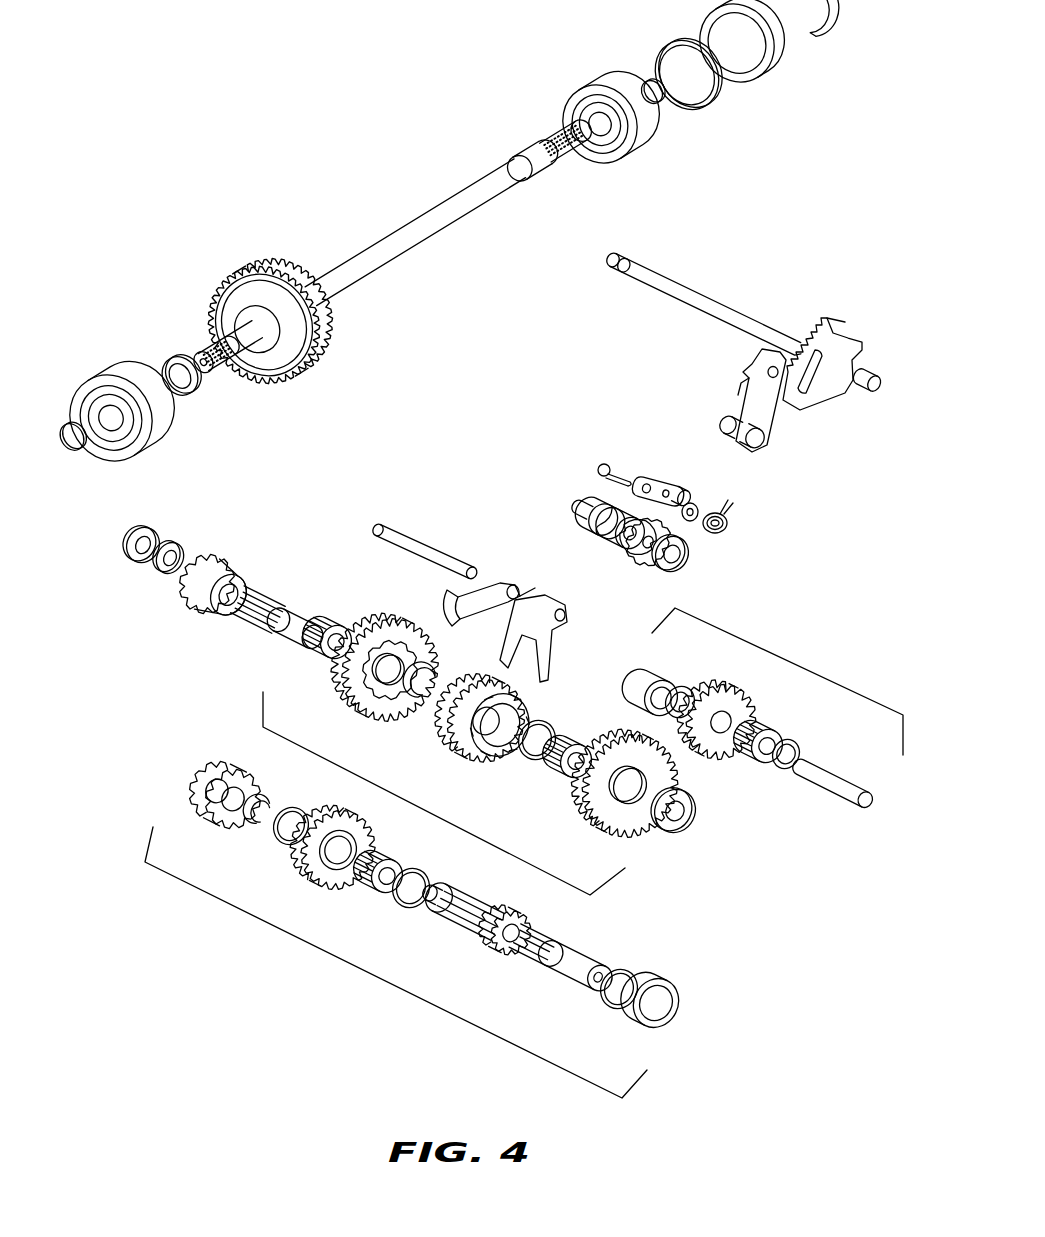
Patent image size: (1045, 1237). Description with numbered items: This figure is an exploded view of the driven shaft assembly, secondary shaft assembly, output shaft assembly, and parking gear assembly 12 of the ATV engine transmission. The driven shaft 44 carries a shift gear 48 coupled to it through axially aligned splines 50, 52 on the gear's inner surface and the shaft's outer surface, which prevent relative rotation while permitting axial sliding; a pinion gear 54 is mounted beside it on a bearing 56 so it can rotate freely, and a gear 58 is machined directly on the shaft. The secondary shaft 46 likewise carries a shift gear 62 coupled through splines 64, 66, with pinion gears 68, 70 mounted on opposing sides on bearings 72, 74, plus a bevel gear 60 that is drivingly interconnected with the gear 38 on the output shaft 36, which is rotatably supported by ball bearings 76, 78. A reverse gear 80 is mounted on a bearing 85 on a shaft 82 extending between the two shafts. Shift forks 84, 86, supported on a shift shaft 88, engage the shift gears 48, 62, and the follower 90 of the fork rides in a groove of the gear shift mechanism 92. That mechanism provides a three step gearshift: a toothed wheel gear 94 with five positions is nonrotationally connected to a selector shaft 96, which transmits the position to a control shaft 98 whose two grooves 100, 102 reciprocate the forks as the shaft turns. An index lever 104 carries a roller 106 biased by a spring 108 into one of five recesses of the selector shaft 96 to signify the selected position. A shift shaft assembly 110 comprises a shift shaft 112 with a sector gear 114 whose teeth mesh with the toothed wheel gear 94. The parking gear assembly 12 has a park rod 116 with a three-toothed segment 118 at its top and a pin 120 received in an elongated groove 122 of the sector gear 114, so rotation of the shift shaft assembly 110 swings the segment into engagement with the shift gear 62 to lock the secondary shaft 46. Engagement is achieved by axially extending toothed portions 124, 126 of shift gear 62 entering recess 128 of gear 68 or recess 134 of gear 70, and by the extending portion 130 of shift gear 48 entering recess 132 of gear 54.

The parking gear assembly 12 is at (730, 367).
The output shaft 36 is at (398, 231).
The gear 38 is at (258, 260).
The driven shaft 44 is at (570, 957).
The secondary shaft 46 is at (290, 597).
The shift gear 48 is at (207, 807).
The splines 50 is at (267, 790).
The splines 52 is at (442, 927).
The pinion gear 54 is at (305, 880).
The bearing 56 is at (370, 887).
The gear 58 is at (507, 957).
The bevel gear 60 is at (227, 557).
The shift gear 62 is at (462, 757).
The splines 64 is at (493, 753).
The splines 66 is at (267, 587).
The pinion gear 68 is at (343, 713).
The pinion gear 70 is at (587, 833).
The bearing 72 is at (318, 653).
The bearing 74 is at (560, 777).
The ball bearing 76 is at (160, 443).
The ball bearing 78 is at (640, 147).
The reverse gear 80 is at (730, 680).
The shaft 82 is at (837, 767).
The shift fork 84 is at (490, 573).
The bearing 85 is at (763, 730).
The shift fork 86 is at (540, 603).
The shift shaft 88 is at (410, 540).
The follower 90 is at (535, 580).
The gear shift mechanism 92 is at (580, 473).
The toothed wheel gear 94 is at (623, 560).
The selector shaft 96 is at (633, 553).
The control shaft 98 is at (607, 550).
The groove 100 is at (577, 495).
The groove 102 is at (633, 503).
The index lever 104 is at (650, 488).
The roller 106 is at (691, 503).
The spring 108 is at (723, 497).
The shift shaft assembly 110 is at (700, 262).
The shift shaft 112 is at (645, 283).
The sector gear 114 is at (827, 340).
The park rod 116 is at (760, 413).
The three-toothed segment 118 is at (737, 383).
The pin 120 is at (782, 352).
The elongated groove 122 is at (820, 387).
The axially extending portion 124 is at (463, 670).
The axially extending portion 126 is at (520, 683).
The recess 128 is at (385, 620).
The axially extending portion 130 is at (237, 822).
The recess 132 is at (357, 847).
The recess 134 is at (630, 807).